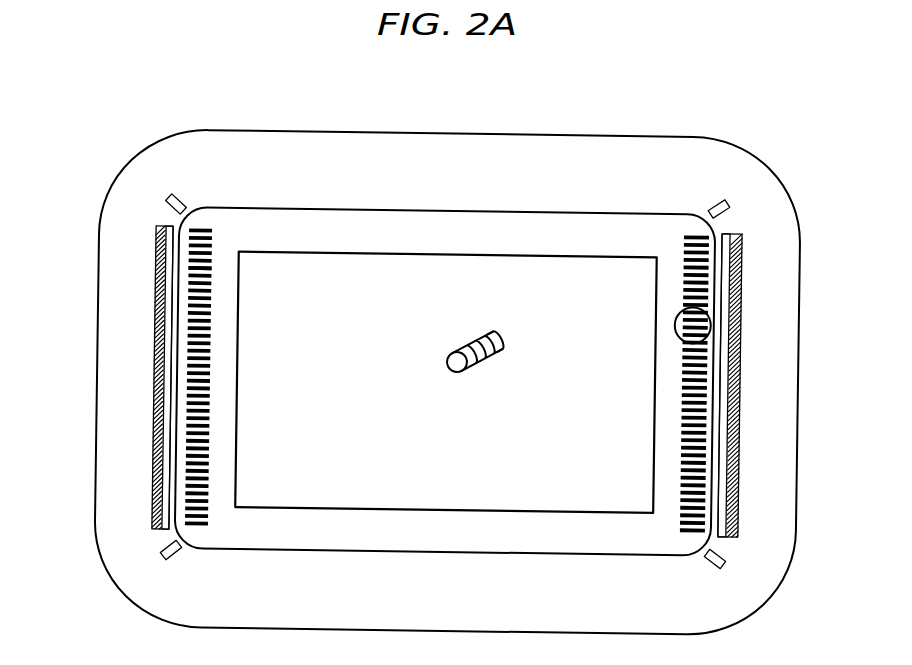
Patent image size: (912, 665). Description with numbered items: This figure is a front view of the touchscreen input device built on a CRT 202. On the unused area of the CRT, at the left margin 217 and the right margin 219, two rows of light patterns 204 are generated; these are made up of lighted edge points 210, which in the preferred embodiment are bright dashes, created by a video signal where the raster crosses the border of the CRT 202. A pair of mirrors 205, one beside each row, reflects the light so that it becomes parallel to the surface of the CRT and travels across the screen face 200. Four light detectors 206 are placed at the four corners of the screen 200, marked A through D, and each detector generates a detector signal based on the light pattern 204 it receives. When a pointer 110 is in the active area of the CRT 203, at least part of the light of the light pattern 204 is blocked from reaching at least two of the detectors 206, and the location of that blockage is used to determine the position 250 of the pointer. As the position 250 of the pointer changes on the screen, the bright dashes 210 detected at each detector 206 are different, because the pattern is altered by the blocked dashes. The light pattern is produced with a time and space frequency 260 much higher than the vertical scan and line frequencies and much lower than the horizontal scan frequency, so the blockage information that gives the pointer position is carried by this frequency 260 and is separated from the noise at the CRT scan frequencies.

The screen face 200 is at (602, 173).
The CRT 202 is at (473, 232).
The active area of the CRT 203 is at (304, 280).
The light patterns 204 is at (197, 233).
The mirrors 205 is at (157, 333).
The light detectors 206 is at (168, 197).
The lighted edge points 210 is at (206, 273).
The left margin 217 is at (175, 417).
The right margin 219 is at (714, 465).
The light pattern frequency 260 is at (711, 318).
The position of the pointer 250 is at (450, 356).
The pointer 110 is at (486, 361).